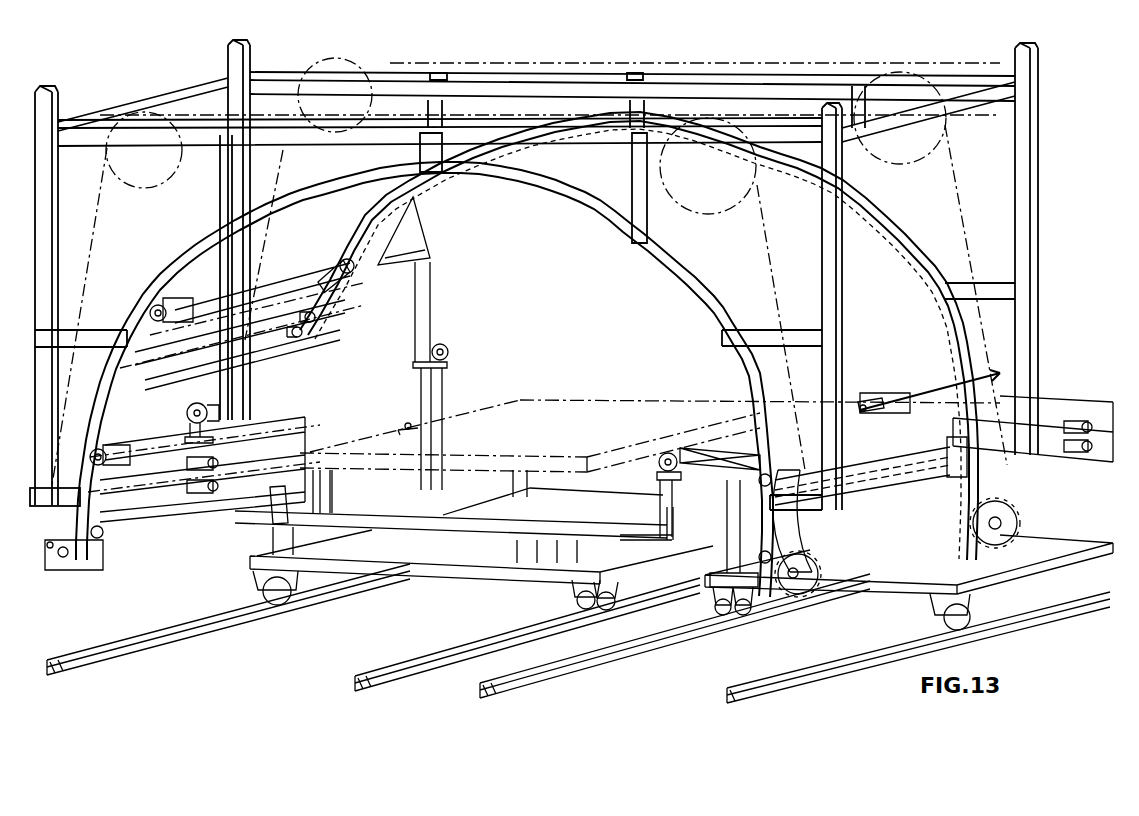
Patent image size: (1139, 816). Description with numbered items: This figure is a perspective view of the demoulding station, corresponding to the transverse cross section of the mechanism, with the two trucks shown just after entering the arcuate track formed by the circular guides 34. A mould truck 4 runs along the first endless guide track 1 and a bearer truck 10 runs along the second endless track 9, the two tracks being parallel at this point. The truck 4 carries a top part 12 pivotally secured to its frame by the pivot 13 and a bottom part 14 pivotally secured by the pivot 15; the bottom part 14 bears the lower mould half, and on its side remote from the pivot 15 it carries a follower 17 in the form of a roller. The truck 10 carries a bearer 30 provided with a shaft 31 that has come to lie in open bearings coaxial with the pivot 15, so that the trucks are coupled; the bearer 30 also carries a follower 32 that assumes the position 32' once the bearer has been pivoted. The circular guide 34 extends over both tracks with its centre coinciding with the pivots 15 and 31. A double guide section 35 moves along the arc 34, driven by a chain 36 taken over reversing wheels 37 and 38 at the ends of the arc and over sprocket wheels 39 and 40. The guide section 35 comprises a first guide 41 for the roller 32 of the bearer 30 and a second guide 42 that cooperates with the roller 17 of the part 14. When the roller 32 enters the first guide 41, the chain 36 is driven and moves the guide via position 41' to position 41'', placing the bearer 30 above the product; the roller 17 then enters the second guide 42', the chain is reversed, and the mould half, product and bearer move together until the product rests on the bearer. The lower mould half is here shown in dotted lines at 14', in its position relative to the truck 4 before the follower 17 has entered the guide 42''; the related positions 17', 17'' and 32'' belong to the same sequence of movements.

The first endless guide track 1 is at (357, 675).
The truck 4 is at (467, 572).
The second endless track 9 is at (727, 687).
The truck 10 is at (904, 587).
The top part 12 is at (420, 228).
The pivot 13 is at (190, 414).
The bottom part 14 is at (1074, 464).
The position of bottom part 14' is at (650, 421).
The pivot 15 is at (663, 468).
The follower 17 is at (396, 414).
The roller 17' is at (312, 352).
The roller 17'' is at (203, 516).
The bearer 30 is at (1033, 457).
The shaft 31 is at (697, 446).
The follower 32 is at (1085, 467).
The position of follower 32' is at (353, 335).
The roller 32'' is at (184, 494).
The circular guide 34 is at (673, 272).
The double guide section 35 is at (782, 520).
The chain 36 is at (768, 257).
The reversing wheel 37 is at (805, 594).
The reversing wheel 38 is at (60, 568).
The sprocket wheel 39 is at (312, 69).
The sprocket wheel 40 is at (716, 192).
The first guide 41 is at (723, 533).
The position of first guide 41' is at (282, 297).
The position of first guide 41'' is at (224, 457).
The second guide 42 is at (871, 500).
The position of second guide 42' is at (266, 345).
The position of second guide 42'' is at (208, 489).